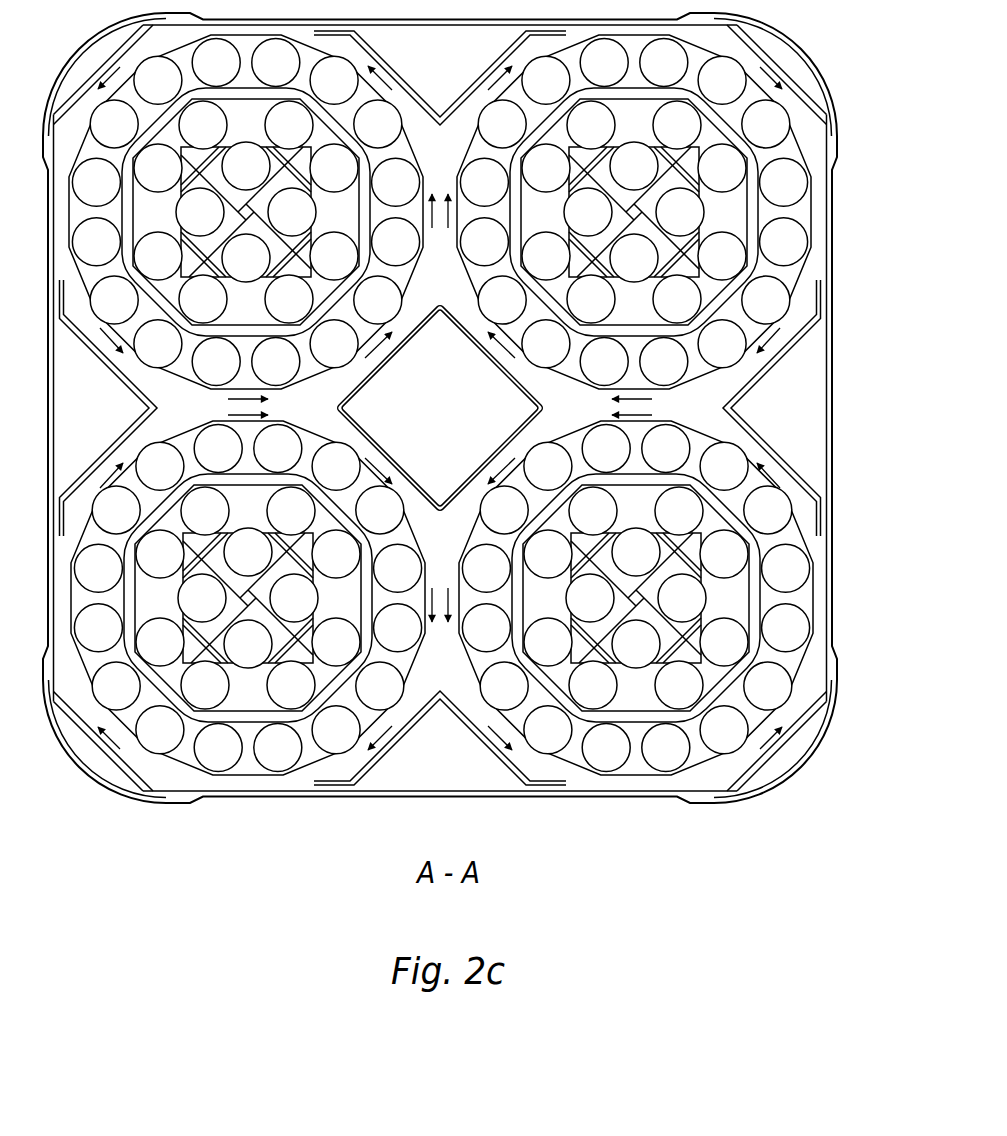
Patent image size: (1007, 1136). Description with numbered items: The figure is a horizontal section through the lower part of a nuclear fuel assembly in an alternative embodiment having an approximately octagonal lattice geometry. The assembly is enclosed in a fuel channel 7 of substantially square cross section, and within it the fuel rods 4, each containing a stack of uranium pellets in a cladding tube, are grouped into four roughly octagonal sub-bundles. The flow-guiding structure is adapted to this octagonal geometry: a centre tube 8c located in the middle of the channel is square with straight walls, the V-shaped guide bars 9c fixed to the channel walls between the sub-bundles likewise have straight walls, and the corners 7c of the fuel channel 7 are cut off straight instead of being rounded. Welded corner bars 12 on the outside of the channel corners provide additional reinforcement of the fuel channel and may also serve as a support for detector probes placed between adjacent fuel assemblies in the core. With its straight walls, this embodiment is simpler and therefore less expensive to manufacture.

The fuel rods 4 is at (792, 632).
The fuel channel 7 is at (828, 213).
The corners of the fuel channel 7c is at (802, 725).
The centre tube 8c is at (527, 432).
The V-shaped guide bars 9c is at (522, 770).
The corner bars 12 is at (802, 775).